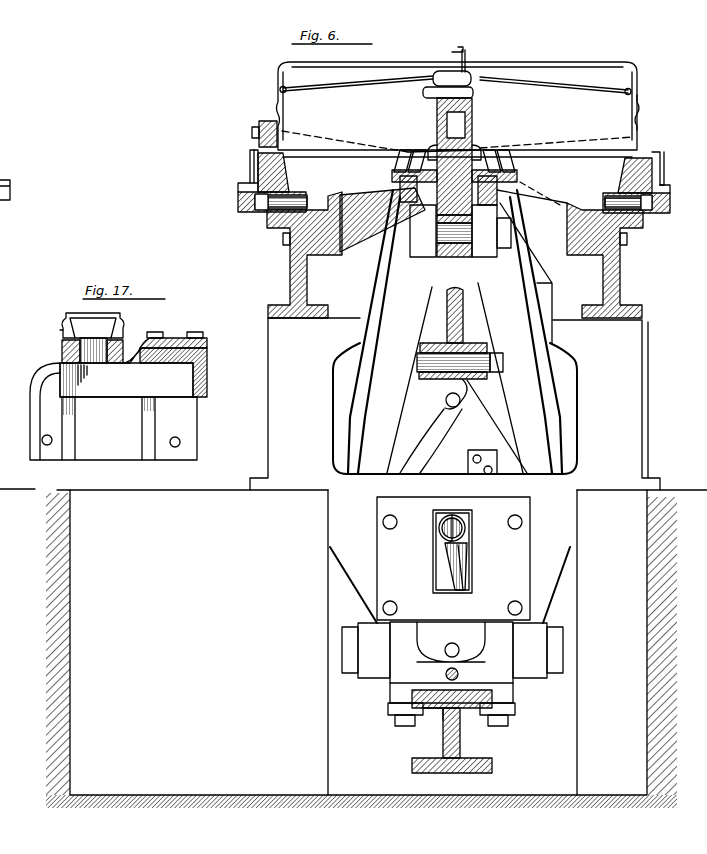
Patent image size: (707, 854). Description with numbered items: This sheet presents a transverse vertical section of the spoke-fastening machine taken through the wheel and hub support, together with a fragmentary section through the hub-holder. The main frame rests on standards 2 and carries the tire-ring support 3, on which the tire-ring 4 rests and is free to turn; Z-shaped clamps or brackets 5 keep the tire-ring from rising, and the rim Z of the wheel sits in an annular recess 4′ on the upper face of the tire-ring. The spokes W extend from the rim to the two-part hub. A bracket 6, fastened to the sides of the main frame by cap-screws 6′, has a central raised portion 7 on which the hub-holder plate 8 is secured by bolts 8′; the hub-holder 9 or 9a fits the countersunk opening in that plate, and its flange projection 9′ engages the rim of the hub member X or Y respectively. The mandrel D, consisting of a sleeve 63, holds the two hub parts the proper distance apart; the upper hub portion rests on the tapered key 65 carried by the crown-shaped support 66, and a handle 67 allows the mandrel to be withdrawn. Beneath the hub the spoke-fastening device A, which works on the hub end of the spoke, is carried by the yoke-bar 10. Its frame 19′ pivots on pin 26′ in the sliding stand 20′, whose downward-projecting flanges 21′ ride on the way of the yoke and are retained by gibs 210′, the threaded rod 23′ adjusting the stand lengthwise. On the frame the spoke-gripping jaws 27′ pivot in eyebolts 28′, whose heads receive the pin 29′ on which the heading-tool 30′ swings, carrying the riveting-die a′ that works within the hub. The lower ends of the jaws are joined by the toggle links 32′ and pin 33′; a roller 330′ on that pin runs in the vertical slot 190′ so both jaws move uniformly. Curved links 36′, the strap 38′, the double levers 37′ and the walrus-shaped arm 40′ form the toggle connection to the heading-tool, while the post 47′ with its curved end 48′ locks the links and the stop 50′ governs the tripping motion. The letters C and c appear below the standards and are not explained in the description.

In FIG. 6, the standards 2 is at (455, 404).
In FIG. 6, the tire-ring support 3 is at (238, 203).
In FIG. 6, the tire-ring 4 is at (288, 171).
In FIG. 6, the annular recess 4′ is at (250, 150).
In FIG. 6, the Z-shaped clamps or brackets 5 is at (250, 163).
In FIG. 6, the bracket 6 is at (527, 200).
In FIG. 6, the cap-screws 6′ is at (283, 240).
In FIG. 17, the cap-screws 6′ is at (113, 411).
In FIG. 6, the raised portion 7 is at (400, 190).
In FIG. 17, the raised portion 7 is at (207, 360).
In FIG. 6, the hub-holder plate 8 is at (418, 152).
In FIG. 17, the hub-holder plate 8 is at (207, 345).
In FIG. 17, the bolts 8′ is at (192, 332).
In FIG. 17, the hub-holder 9 is at (62, 350).
In FIG. 6, the flange projection 9′ is at (402, 152).
In FIG. 17, the flange projection 9′ is at (93, 325).
In FIG. 6, the hub-holder 9a is at (505, 156).
In FIG. 6, the yoke-bar 10 is at (460, 730).
In FIG. 6, the frame 19′ is at (333, 450).
In FIG. 6, the sliding stand 20′ is at (451, 652).
In FIG. 6, the lateral flanges 21′ is at (392, 698).
In FIG. 6, the threaded rod 23′ is at (446, 675).
In FIG. 6, the pin 26′ is at (342, 648).
In FIG. 6, the spoke-gripping jaws 27′ is at (455, 331).
In FIG. 6, the eyebolts 28′ is at (426, 256).
In FIG. 6, the pin 29′ is at (452, 258).
In FIG. 6, the heading-tool 30′ is at (505, 148).
In FIG. 6, the double links 32′ is at (445, 547).
In FIG. 6, the pin or bolt 33′ is at (440, 530).
In FIG. 6, the roller 330′ is at (465, 530).
In FIG. 6, the bent links 36′ is at (440, 420).
In FIG. 6, the levers 37′ is at (430, 379).
In FIG. 6, the strap 38′ is at (466, 383).
In FIG. 6, the walrus-shaped link or arm 40′ is at (464, 318).
In FIG. 6, the post 47′ is at (465, 568).
In FIG. 6, the upper curved end 48′ is at (466, 552).
In FIG. 6, the stop 50′ is at (490, 450).
In FIG. 6, the sleeve 63 is at (470, 118).
In FIG. 6, the tapered key 65 is at (423, 93).
In FIG. 6, the crown-shaped support 66 is at (472, 90).
In FIG. 6, the handle 67 is at (466, 56).
In FIG. 6, the slot 190′ is at (436, 585).
In FIG. 6, the gibs 210′ is at (390, 712).
In FIG. 6, the spoke-fastening device A is at (492, 426).
In FIG. 6, the pit C is at (361, 649).
In FIG. 6, the ground line c is at (353, 486).
In FIG. 6, the mandrel D is at (430, 118).
In FIG. 6, the spokes W is at (458, 106).
In FIG. 6, the hub portion X is at (470, 70).
In FIG. 17, the hub portion X is at (63, 320).
In FIG. 6, the hub portion Y is at (480, 147).
In FIG. 6, the rim Z is at (645, 100).
In FIG. 6, the riveting-die a′ is at (430, 145).